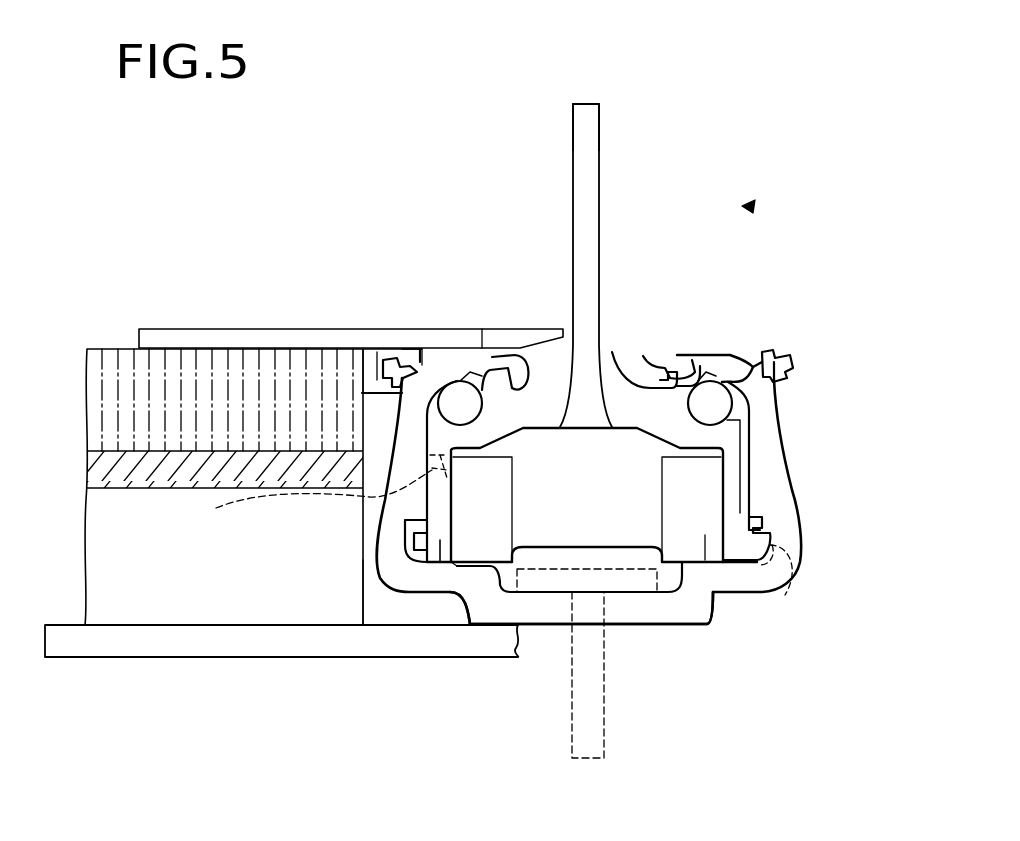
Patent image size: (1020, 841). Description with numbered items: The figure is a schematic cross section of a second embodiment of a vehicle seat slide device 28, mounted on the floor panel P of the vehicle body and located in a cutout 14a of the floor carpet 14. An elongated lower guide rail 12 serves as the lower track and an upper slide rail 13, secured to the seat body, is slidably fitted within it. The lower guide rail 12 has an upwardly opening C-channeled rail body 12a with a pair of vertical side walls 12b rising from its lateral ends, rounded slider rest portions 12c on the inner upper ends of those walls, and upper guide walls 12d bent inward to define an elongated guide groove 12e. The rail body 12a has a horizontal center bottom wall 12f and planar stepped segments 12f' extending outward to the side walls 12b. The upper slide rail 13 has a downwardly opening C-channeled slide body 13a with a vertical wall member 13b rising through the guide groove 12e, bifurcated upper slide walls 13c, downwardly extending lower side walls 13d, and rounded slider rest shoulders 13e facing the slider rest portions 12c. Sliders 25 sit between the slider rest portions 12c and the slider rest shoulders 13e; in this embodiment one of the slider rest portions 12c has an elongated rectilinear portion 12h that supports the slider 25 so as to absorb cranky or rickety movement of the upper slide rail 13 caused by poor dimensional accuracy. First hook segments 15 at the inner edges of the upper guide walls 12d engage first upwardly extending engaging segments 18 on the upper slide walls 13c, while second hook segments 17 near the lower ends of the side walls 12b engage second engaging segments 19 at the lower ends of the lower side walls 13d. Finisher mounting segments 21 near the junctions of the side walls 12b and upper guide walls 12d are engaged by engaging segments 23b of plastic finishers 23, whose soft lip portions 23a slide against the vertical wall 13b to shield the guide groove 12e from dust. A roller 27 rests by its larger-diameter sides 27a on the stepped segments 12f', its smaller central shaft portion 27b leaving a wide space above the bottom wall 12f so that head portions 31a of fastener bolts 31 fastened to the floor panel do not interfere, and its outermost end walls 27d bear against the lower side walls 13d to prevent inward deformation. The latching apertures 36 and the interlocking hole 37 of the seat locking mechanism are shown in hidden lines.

The lower guide rail 12 is at (787, 447).
The rail body 12a is at (772, 542).
The vertical side walls 12b is at (770, 482).
The slider rest portions 12c is at (737, 386).
The upper guide walls 12d is at (677, 356).
The guide groove 12e is at (615, 355).
The bottom wall 12f is at (569, 706).
The planar stepped segments 12f' is at (627, 672).
The elongated rectilinear portion 12h is at (743, 356).
The upper slide rail 13 is at (601, 192).
The slide body 13a is at (438, 458).
The vertical wall member 13b is at (594, 150).
The upper slide walls 13c is at (537, 412).
The lower side walls 13d is at (438, 440).
The slider rest shoulders 13e is at (418, 365).
The floor carpet 14 is at (100, 349).
The cutout 14a is at (362, 578).
The first hook segments 15 is at (498, 372).
The second hook segments 17 is at (403, 518).
The first engaging segments 18 is at (468, 380).
The second engaging segments 19 is at (440, 540).
The finisher mounting segments 21 is at (377, 352).
The finishers 23 is at (158, 329).
The soft lip portions 23a is at (524, 340).
The engaging segments 23b is at (385, 363).
The sliders 25 is at (460, 392).
The rollers 27 is at (583, 455).
The sides of the roller 27a is at (710, 550).
The central shaft portion 27b is at (528, 600).
The outermost end walls 27d is at (455, 578).
The vehicle seat slide device 28 is at (748, 205).
The fastener bolts 31 is at (605, 745).
The head portions 31a is at (640, 625).
The latching apertures 36 is at (306, 500).
The interlocking hole 37 is at (780, 592).
The floor panel P is at (165, 652).